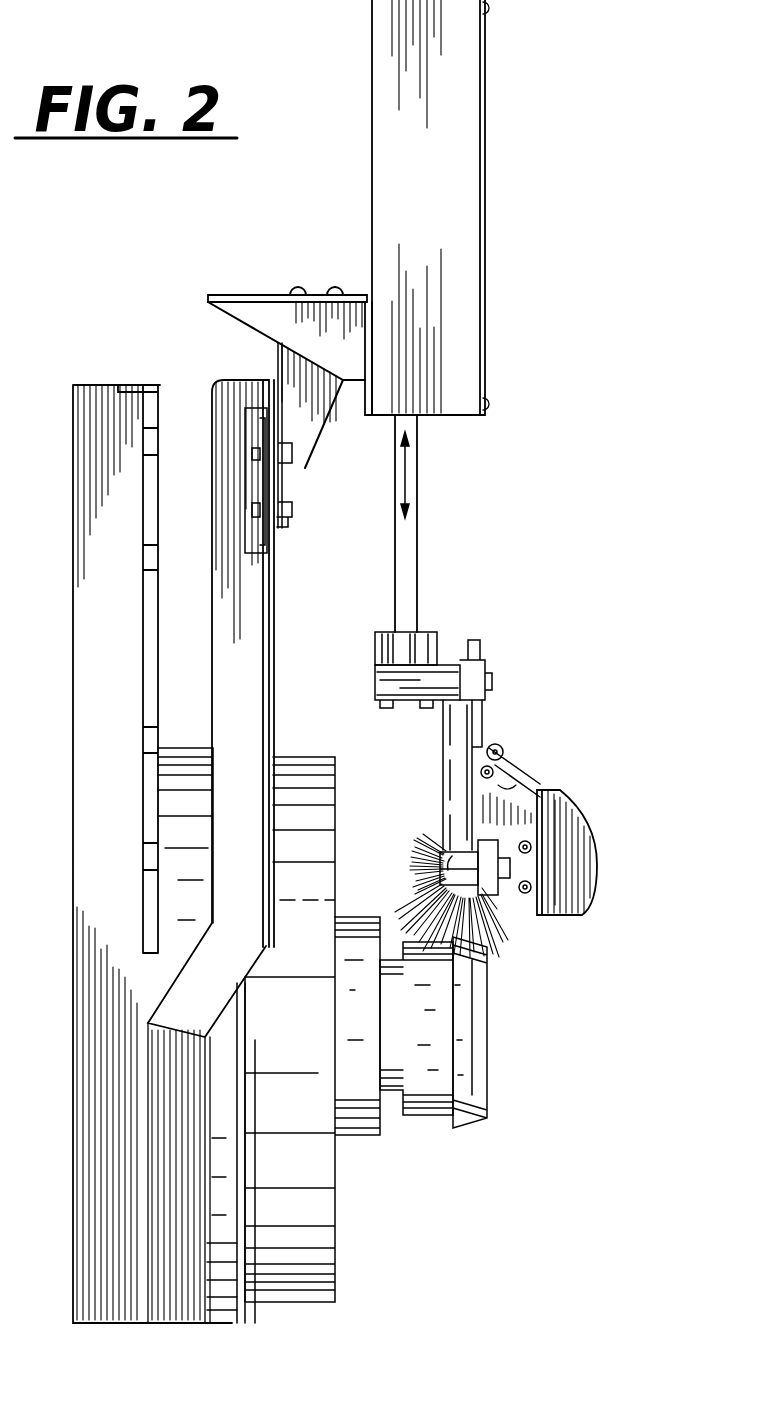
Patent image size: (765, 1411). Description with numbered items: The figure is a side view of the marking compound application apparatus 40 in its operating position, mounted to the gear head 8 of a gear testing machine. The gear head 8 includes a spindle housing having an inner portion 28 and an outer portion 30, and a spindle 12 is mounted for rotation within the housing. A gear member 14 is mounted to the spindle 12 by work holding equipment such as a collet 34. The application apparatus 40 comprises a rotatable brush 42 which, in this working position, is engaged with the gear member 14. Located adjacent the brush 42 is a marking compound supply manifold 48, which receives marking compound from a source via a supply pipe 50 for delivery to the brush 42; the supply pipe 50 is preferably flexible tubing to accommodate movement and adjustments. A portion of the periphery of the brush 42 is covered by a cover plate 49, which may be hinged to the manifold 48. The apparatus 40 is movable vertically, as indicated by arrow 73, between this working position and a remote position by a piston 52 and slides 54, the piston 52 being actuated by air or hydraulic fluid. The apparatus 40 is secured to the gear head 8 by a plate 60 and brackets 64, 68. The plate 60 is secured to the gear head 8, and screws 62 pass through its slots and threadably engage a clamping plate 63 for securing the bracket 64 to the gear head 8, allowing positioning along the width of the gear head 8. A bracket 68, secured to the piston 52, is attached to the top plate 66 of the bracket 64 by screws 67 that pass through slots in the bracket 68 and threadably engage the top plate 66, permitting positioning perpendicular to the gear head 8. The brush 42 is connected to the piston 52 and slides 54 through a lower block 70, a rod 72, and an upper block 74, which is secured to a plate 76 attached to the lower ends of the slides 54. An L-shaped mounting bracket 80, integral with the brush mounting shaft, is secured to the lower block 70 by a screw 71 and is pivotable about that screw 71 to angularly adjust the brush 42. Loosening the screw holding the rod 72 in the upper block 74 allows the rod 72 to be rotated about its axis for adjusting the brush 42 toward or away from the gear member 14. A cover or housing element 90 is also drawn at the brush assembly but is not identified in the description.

The gear head 8 is at (94, 505).
The spindle 12 is at (348, 1135).
The gear member 14 is at (489, 1072).
The inner portion 28 is at (190, 772).
The outer portion 30 is at (305, 765).
The collet 34 is at (428, 1115).
The marking compound application apparatus 40 is at (533, 595).
The rotatable brush 42 is at (543, 930).
The marking compound supply manifold 48 is at (517, 773).
The cover plate 49 is at (553, 814).
The supply pipe 50 is at (478, 641).
The piston 52 is at (486, 304).
The slides 54 is at (417, 549).
The plate 60 is at (251, 600).
The screws 62 is at (293, 508).
The clamping plate 63 is at (267, 425).
The bracket 64 is at (294, 377).
The top plate 66 is at (232, 312).
The screws 67 is at (333, 293).
The bracket 68 is at (268, 293).
The lower block 70 is at (477, 868).
The screw 71 is at (533, 867).
The rod 72 is at (445, 743).
The arrow 73 is at (417, 479).
The upper block 74 is at (405, 713).
The plate 76 is at (427, 644).
The L-shaped mounting bracket 80 is at (510, 863).
The motor cover 90 is at (522, 822).